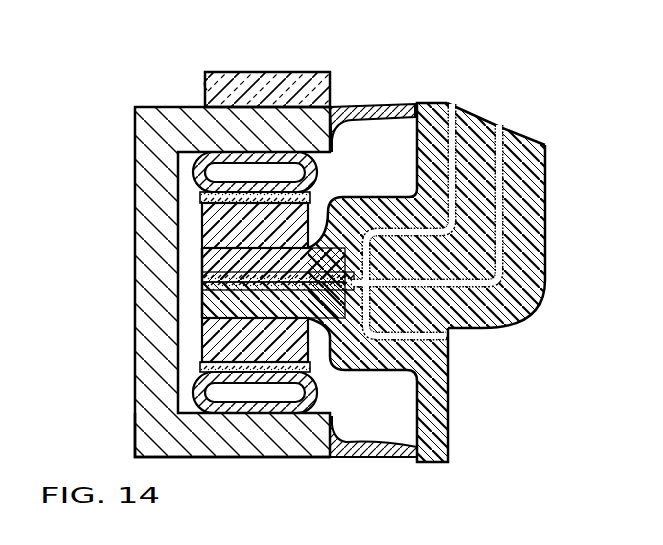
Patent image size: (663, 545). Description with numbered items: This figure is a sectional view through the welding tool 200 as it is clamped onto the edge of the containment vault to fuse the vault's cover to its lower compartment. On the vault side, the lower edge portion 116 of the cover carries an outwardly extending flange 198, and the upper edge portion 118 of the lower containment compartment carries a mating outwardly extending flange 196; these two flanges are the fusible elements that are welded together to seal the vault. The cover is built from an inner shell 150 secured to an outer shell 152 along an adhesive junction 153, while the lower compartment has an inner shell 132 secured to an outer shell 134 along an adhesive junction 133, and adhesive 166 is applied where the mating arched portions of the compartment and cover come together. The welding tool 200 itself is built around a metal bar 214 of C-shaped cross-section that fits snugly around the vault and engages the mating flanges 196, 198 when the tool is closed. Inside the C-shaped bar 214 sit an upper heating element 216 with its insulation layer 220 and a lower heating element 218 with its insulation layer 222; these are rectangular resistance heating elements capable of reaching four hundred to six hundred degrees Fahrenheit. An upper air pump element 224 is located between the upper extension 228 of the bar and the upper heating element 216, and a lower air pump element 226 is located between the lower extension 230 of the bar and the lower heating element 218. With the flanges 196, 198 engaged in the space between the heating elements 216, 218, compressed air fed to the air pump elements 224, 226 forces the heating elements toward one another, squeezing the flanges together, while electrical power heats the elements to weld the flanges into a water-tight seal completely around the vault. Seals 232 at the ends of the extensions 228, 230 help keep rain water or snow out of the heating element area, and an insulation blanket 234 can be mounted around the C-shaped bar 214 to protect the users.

The welding tool 200 is at (126, 106).
The metal bar 214 is at (143, 185).
The upper extension 228 is at (252, 118).
The insulation blanket 234 is at (207, 79).
The seals 232 is at (352, 113).
The upper air pump element 224 is at (196, 163).
The lower air pump element 226 is at (193, 389).
The insulation layer 220 is at (203, 197).
The insulation layer 222 is at (200, 366).
The upper heating element 216 is at (203, 234).
The lower heating element 218 is at (203, 337).
The outwardly extending flange 196 is at (216, 302).
The outwardly extending flange 198 is at (202, 261).
The lower extension 230 is at (200, 445).
The inner shell 132 is at (547, 201).
The lower edge portion 116 is at (347, 203).
The upper edge portion 118 is at (352, 343).
The outer shell 152 is at (437, 107).
The adhesive junction 153 is at (449, 112).
The inner shell 150 is at (485, 127).
The adhesive 166 is at (510, 174).
The adhesive junction 133 is at (448, 338).
The outer shell 134 is at (431, 430).